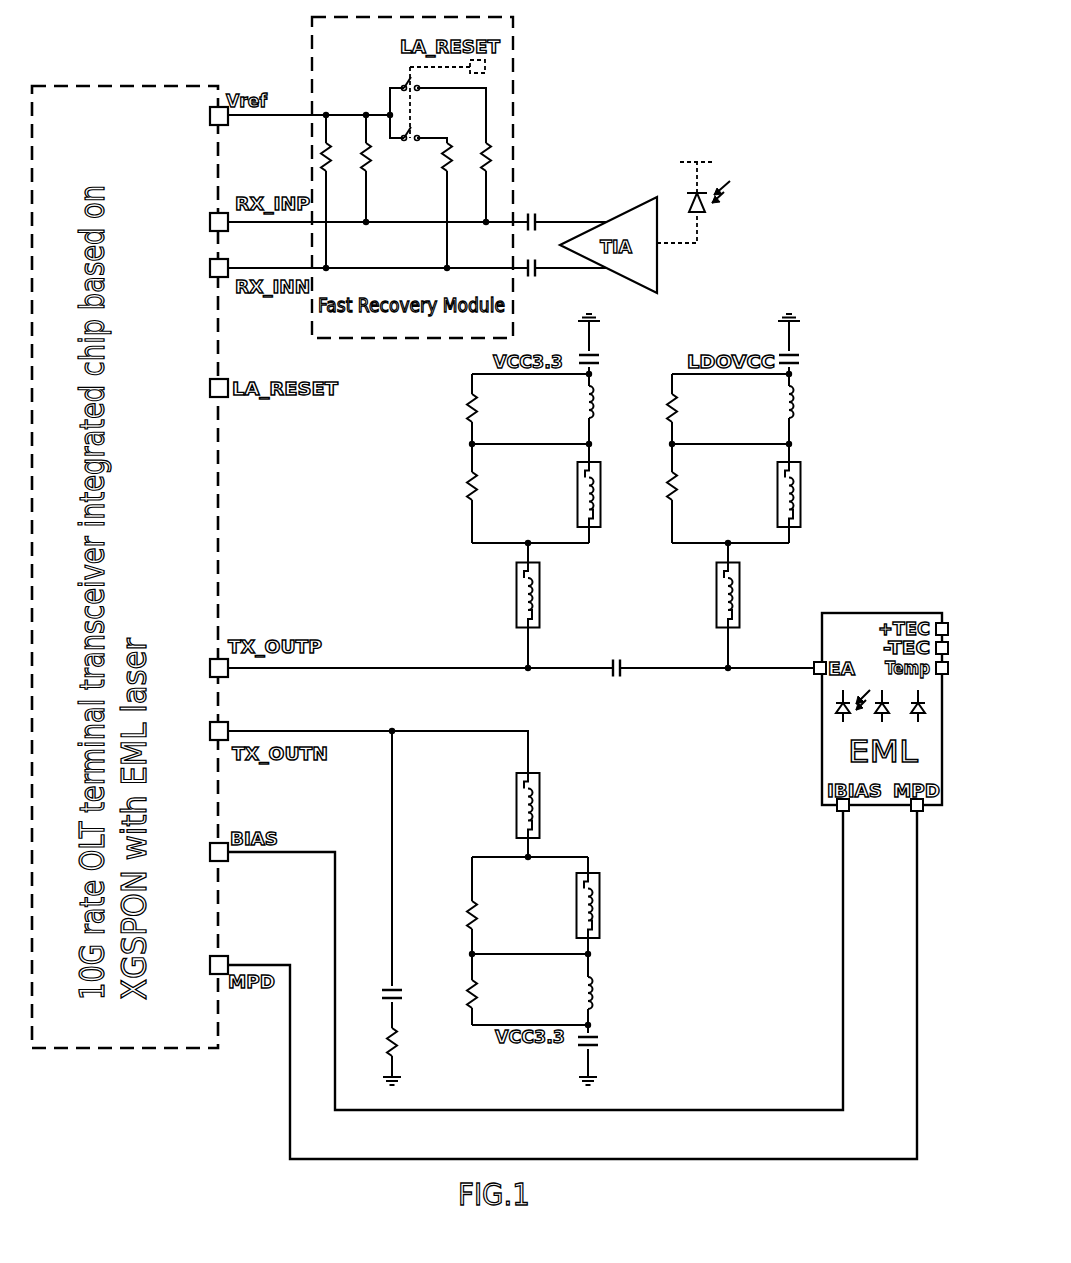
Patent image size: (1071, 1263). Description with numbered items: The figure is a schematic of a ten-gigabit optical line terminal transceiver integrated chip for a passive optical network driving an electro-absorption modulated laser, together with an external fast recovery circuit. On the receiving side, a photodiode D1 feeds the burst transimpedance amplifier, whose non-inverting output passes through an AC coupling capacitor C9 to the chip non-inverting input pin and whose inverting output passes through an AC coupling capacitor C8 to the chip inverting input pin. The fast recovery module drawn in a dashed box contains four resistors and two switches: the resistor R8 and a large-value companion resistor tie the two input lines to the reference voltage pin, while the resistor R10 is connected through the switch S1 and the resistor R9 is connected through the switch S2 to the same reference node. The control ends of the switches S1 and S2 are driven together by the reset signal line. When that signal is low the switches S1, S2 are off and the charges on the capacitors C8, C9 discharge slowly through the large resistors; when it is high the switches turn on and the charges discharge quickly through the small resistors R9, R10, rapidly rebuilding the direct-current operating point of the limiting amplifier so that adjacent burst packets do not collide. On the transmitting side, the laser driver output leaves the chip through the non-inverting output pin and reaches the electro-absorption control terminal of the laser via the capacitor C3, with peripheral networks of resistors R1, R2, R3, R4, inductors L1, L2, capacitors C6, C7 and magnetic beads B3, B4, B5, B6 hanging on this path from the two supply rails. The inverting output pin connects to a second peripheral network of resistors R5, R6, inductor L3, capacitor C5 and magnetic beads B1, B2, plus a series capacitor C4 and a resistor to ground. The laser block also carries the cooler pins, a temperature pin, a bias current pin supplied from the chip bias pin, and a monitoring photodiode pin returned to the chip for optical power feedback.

The resistor R1 is at (457, 408).
The resistor R2 is at (457, 486).
The resistor R3 is at (658, 408).
The resistor R4 is at (658, 486).
The resistor R5 is at (457, 915).
The resistor R6 is at (457, 994).
The resistor R8 is at (379, 176).
The resistor R9 is at (432, 176).
The resistor R10 is at (471, 178).
The capacitor C3 is at (616, 659).
The capacitor C4 is at (377, 994).
The capacitor C5 is at (601, 1058).
The capacitor C6 is at (600, 344).
The capacitor C7 is at (800, 344).
The AC coupling capacitor C8 is at (531, 280).
The AC coupling capacitor C9 is at (531, 211).
The inductor L1 is at (607, 404).
The inductor L2 is at (808, 404).
The inductor L3 is at (608, 993).
The magnetic bead B1 is at (605, 905).
The magnetic bead B2 is at (544, 805).
The magnetic bead B3 is at (544, 595).
The magnetic bead B4 is at (714, 595).
The magnetic bead B5 is at (603, 494).
The magnetic bead B6 is at (804, 494).
The switch S1 is at (421, 95).
The switch S2 is at (421, 129).
The photodiode D1 is at (697, 201).